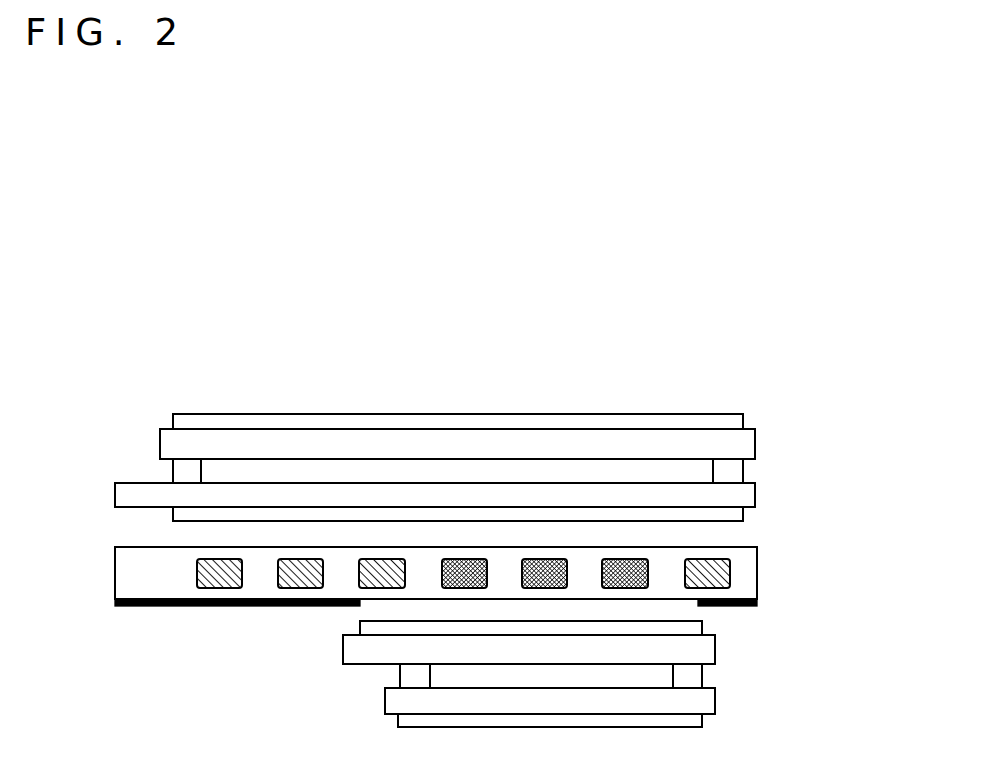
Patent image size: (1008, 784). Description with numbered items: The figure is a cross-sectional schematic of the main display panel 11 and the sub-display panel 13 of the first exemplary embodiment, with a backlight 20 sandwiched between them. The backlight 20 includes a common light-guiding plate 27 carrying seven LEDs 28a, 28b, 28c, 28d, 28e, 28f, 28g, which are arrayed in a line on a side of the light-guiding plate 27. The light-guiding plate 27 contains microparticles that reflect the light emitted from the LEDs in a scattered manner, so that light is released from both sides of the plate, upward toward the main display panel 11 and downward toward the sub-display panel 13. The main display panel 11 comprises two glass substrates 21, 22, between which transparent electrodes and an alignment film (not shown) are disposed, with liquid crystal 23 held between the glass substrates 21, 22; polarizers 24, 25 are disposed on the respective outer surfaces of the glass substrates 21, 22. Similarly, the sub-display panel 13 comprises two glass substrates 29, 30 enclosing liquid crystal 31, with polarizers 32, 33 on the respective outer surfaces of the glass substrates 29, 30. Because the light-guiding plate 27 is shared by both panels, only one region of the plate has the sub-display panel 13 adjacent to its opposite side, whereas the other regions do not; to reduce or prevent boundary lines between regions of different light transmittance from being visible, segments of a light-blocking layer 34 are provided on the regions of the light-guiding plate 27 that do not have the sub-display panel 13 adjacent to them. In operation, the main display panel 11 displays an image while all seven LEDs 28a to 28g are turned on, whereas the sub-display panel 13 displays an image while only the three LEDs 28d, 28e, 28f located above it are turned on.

The main display panel 11 is at (492, 449).
The sub-display panel 13 is at (587, 691).
The backlight 20 is at (494, 587).
The glass substrate 21 is at (748, 443).
The glass substrate 22 is at (748, 494).
The liquid crystal 23 is at (288, 468).
The polarizer 24 is at (187, 416).
The polarizer 25 is at (172, 513).
The light-guiding plate 27 is at (752, 567).
The LED 28a is at (209, 558).
The LED 28b is at (291, 558).
The LED 28c is at (373, 558).
The LED 28d is at (455, 558).
The LED 28e is at (536, 558).
The LED 28f is at (617, 558).
The LED 28g is at (699, 558).
The glass substrate 29 is at (710, 652).
The glass substrate 30 is at (710, 703).
The liquid crystal 31 is at (567, 678).
The polarizer 32 is at (358, 626).
The polarizer 33 is at (420, 721).
The light-blocking layer 34 is at (257, 607).